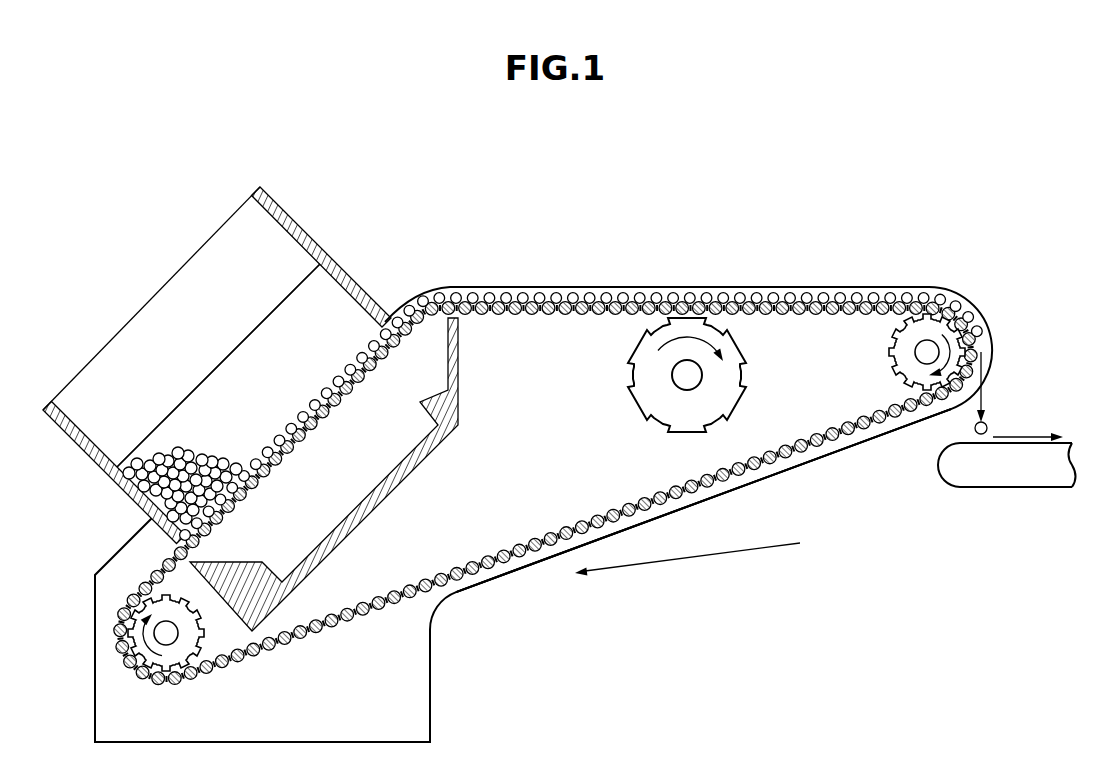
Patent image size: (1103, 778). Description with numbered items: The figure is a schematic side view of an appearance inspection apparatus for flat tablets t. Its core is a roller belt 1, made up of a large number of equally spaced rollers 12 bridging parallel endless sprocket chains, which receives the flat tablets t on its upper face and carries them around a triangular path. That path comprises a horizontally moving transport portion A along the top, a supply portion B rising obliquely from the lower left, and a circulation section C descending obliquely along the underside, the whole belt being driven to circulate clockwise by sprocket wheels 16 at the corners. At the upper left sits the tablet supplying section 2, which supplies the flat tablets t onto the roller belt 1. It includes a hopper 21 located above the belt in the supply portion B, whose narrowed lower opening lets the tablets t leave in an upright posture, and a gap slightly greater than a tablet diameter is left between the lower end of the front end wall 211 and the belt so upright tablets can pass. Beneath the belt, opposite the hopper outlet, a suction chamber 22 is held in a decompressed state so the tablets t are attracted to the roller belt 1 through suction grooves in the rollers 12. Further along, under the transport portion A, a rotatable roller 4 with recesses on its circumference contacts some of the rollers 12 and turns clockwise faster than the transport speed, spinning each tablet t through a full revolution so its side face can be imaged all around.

The roller belt 1 is at (835, 464).
The tablet supplying section 2 is at (237, 314).
The rotatable roller 4 is at (735, 380).
The rollers 12 is at (556, 293).
The sprocket wheels 16 is at (929, 335).
The hopper 21 is at (173, 297).
The suction chamber 22 is at (456, 412).
The front end wall 211 is at (372, 292).
The transport portion A is at (840, 252).
The supply portion B is at (331, 363).
The circulation section C is at (536, 586).
The flat tablet t is at (688, 290).